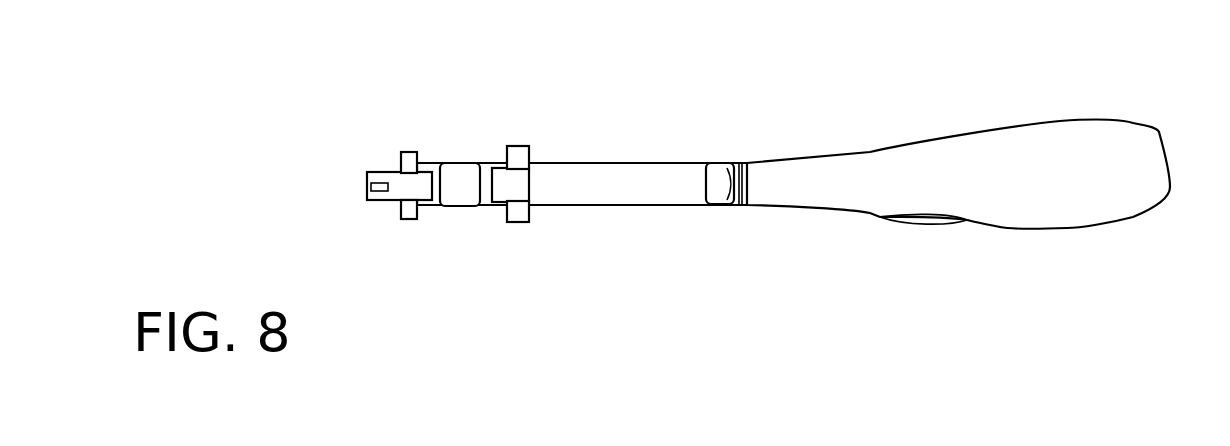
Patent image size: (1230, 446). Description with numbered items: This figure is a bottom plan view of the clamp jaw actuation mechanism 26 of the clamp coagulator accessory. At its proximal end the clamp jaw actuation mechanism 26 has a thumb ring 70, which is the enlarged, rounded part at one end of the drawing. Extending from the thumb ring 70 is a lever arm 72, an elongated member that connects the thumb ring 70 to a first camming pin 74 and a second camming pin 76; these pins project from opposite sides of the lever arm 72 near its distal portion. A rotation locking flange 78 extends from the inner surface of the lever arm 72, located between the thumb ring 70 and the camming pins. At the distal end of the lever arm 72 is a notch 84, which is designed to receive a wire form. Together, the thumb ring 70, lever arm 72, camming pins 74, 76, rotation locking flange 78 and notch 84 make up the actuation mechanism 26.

The clamp jaw actuation mechanism 26 is at (755, 147).
The thumb ring 70 is at (1131, 217).
The lever arm 72 is at (617, 163).
The first camming pin 74 is at (517, 146).
The second camming pin 76 is at (407, 152).
The rotation locking flange 78 is at (718, 163).
The notch 84 is at (388, 188).